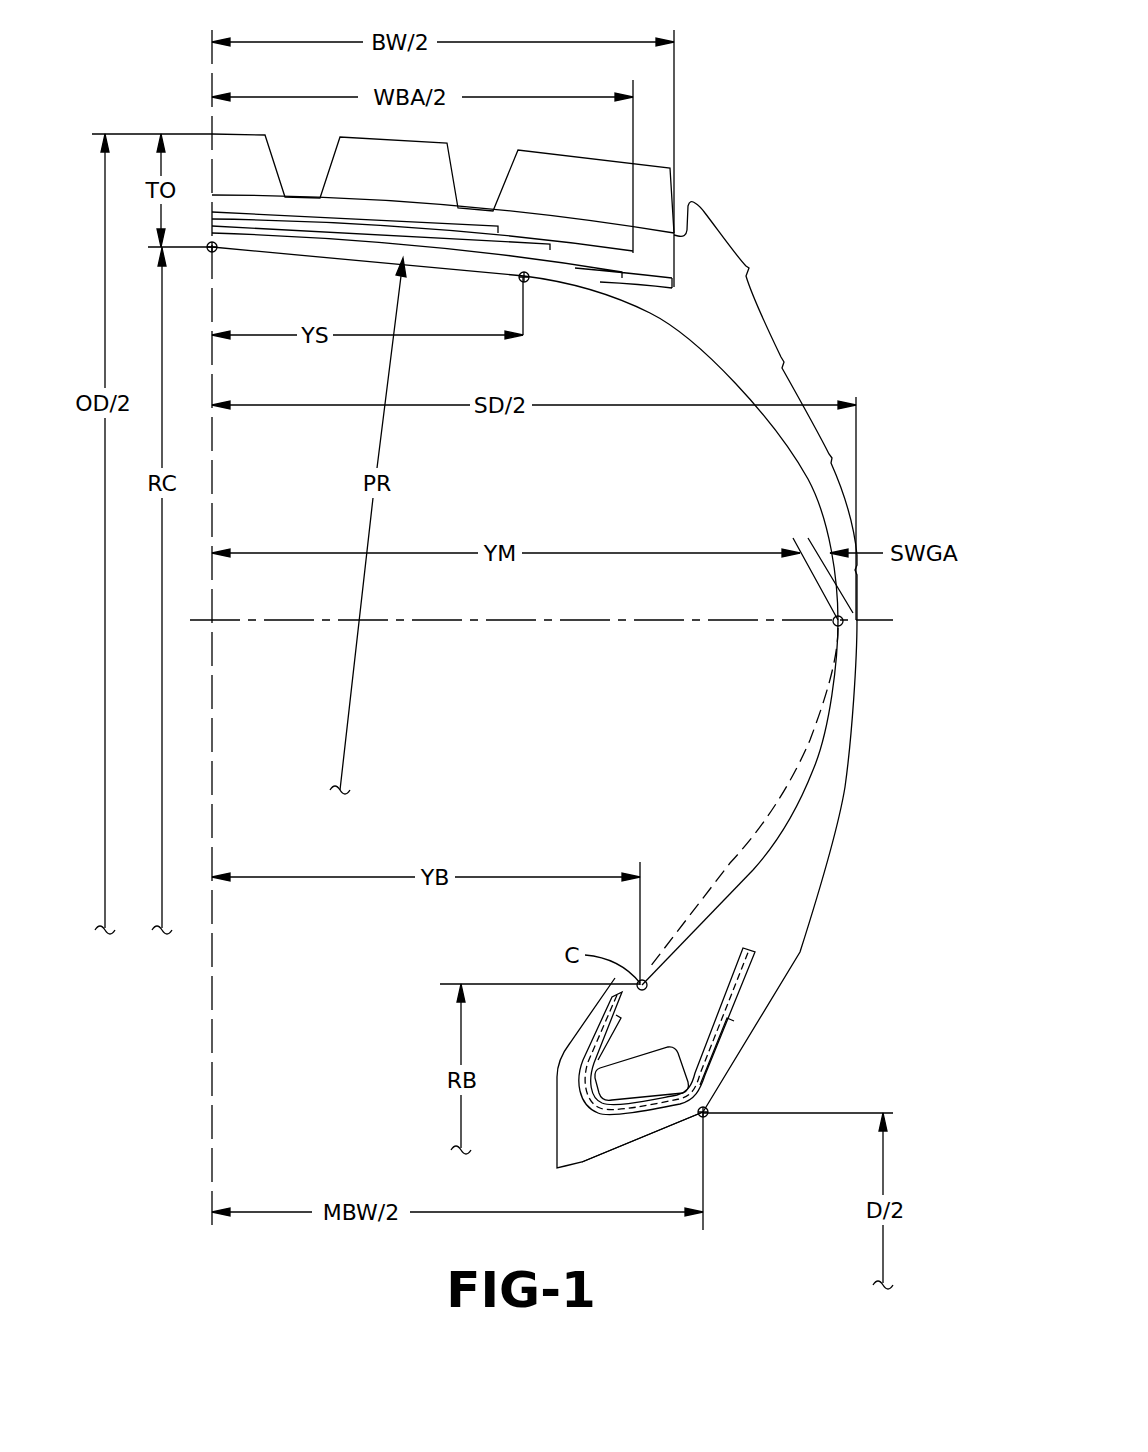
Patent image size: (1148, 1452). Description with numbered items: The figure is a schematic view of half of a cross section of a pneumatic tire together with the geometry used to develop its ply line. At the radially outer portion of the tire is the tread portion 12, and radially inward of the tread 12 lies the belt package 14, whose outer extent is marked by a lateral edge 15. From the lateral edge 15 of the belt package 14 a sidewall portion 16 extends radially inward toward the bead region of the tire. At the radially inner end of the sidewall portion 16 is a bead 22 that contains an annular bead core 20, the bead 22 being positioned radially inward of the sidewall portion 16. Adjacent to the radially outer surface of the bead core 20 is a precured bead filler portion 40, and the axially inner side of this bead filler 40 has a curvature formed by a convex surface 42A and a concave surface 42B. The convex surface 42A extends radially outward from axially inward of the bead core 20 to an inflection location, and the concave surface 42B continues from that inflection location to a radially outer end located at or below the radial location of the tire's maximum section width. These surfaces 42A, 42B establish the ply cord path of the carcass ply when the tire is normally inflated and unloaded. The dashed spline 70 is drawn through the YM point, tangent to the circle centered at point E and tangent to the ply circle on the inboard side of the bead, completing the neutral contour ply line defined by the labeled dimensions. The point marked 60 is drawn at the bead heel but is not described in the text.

The tread portion 12 is at (633, 131).
The belt package 14 is at (267, 229).
The lateral edge 15 is at (675, 70).
The sidewall portion 16 is at (857, 693).
The bead core 20 is at (650, 1077).
The bead 22 is at (745, 1006).
The precured bead filler portion 40 is at (710, 952).
The convex surface 42A is at (640, 1007).
The concave surface 42B is at (803, 808).
The bead heel point 60 is at (703, 1116).
The spline 70 is at (770, 817).